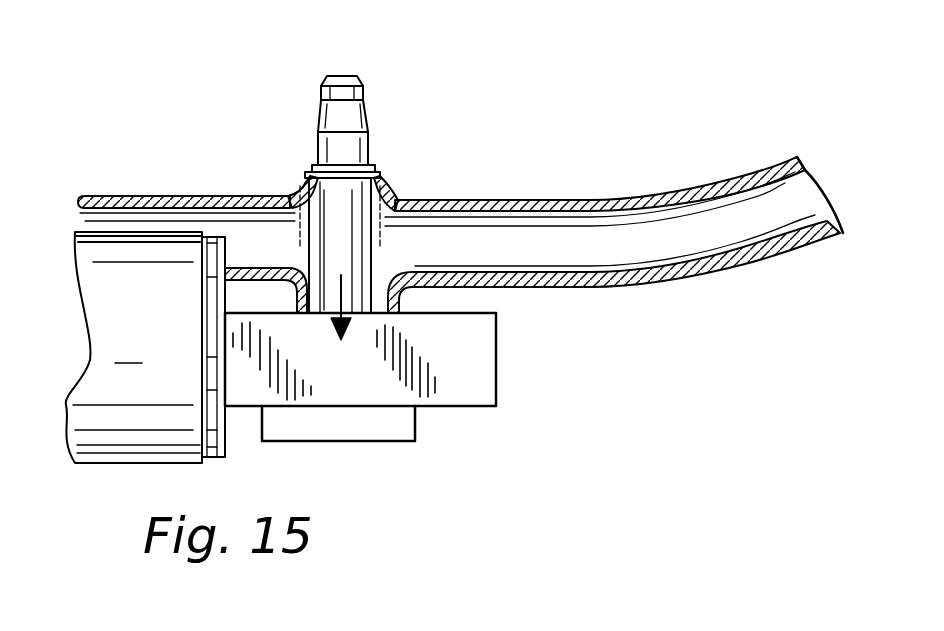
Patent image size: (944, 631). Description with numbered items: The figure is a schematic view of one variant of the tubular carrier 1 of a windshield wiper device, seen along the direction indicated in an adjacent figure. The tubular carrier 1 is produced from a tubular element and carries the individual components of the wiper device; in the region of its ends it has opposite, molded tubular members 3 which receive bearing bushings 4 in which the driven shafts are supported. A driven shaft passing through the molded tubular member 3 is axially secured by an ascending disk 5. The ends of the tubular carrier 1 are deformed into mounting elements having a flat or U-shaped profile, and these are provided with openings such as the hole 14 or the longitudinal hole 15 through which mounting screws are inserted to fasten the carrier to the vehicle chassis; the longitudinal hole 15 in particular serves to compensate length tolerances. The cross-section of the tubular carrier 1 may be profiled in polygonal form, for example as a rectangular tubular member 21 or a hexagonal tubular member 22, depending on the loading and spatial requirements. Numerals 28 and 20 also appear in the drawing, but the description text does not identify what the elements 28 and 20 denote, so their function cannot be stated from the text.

The tubular carrier 1 is at (207, 197).
The ascending disk 5 is at (297, 195).
The longitudinal hole 15 is at (310, 180).
The bearing bushing 4 is at (352, 122).
The molded tubular member 3 is at (381, 177).
The rectangular tubular member 21 is at (385, 200).
The bolt shank 28 is at (343, 283).
The hole 14 is at (297, 313).
The hexagonal tubular member 22 is at (403, 313).
The support block 20 is at (488, 370).